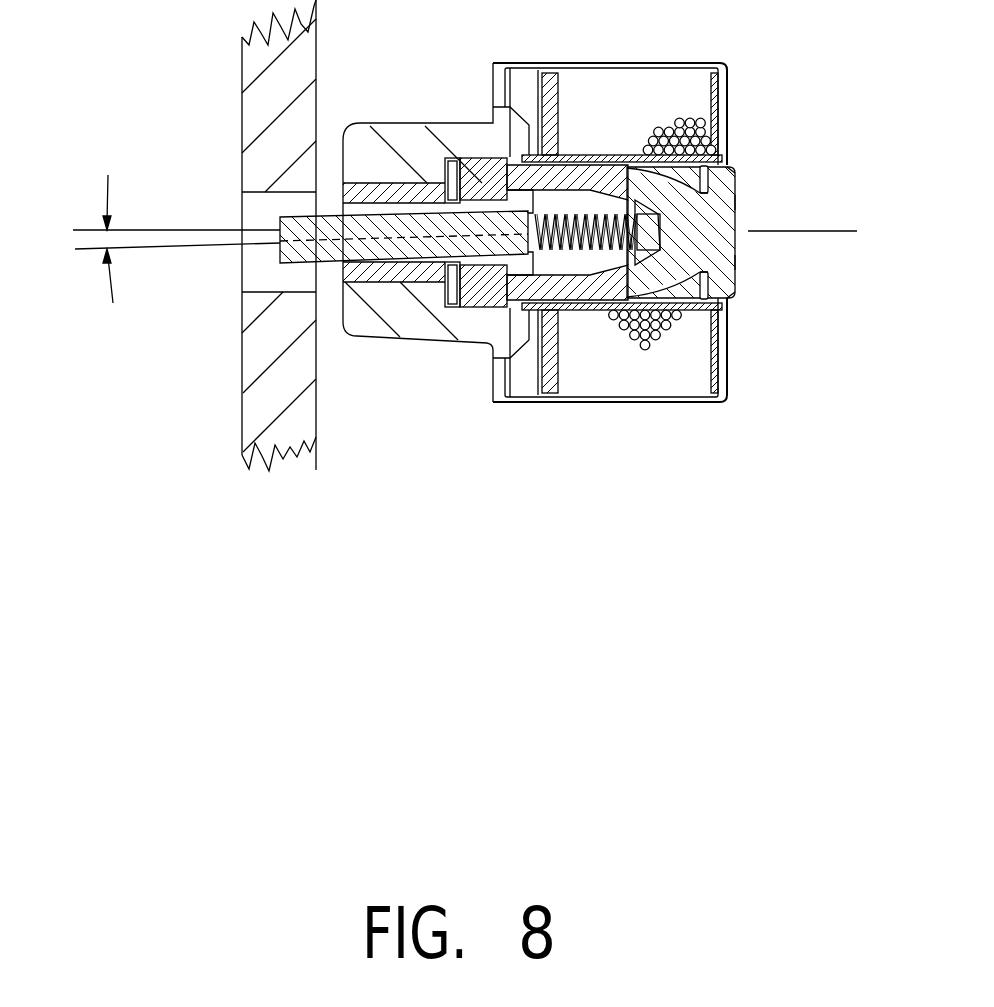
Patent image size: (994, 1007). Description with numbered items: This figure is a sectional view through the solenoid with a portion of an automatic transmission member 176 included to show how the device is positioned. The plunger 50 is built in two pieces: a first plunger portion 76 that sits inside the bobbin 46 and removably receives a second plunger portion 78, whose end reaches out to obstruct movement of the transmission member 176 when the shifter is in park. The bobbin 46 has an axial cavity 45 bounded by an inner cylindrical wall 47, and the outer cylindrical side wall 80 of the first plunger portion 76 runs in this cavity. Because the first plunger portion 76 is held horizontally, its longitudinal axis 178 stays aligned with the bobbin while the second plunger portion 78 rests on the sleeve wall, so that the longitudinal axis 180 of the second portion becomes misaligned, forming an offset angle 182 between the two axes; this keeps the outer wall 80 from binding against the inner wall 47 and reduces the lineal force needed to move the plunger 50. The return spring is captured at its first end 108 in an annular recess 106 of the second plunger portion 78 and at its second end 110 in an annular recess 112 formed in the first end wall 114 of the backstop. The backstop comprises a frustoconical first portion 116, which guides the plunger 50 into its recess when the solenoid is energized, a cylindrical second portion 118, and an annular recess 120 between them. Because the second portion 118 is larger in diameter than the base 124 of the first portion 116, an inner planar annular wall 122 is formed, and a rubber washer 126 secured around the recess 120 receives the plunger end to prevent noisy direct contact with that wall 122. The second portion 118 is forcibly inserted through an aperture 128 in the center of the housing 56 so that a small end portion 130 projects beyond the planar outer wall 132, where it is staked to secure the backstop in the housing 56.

The axial cavity 45 is at (722, 84).
The bobbin 46 is at (548, 395).
The inner cylindrical wall 47 is at (645, 330).
The plunger 50 is at (470, 290).
The housing 56 is at (600, 400).
The first plunger portion 76 is at (470, 292).
The second plunger portion 78 is at (347, 297).
The outer cylindrical side wall 80 is at (492, 122).
The annular recess 106 is at (485, 187).
The first end of the spring 108 is at (546, 263).
The second end of the spring 110 is at (641, 182).
The annular recess 112 is at (641, 263).
The first end wall 114 is at (629, 197).
The first portion 116 is at (642, 148).
The second portion 118 is at (731, 300).
The annular recess 120 is at (698, 240).
The inner wall 122 is at (712, 194).
The base 124 is at (735, 286).
The rubber washer 126 is at (728, 165).
The aperture 128 is at (729, 168).
The end portion 130 is at (747, 202).
The planar outer wall 132 is at (736, 262).
The automatic transmission member 176 is at (240, 161).
The longitudinal axis of the first plunger portion 178 is at (143, 229).
The longitudinal axis of the second plunger portion 180 is at (156, 248).
The offset angle θ 182 is at (57, 253).